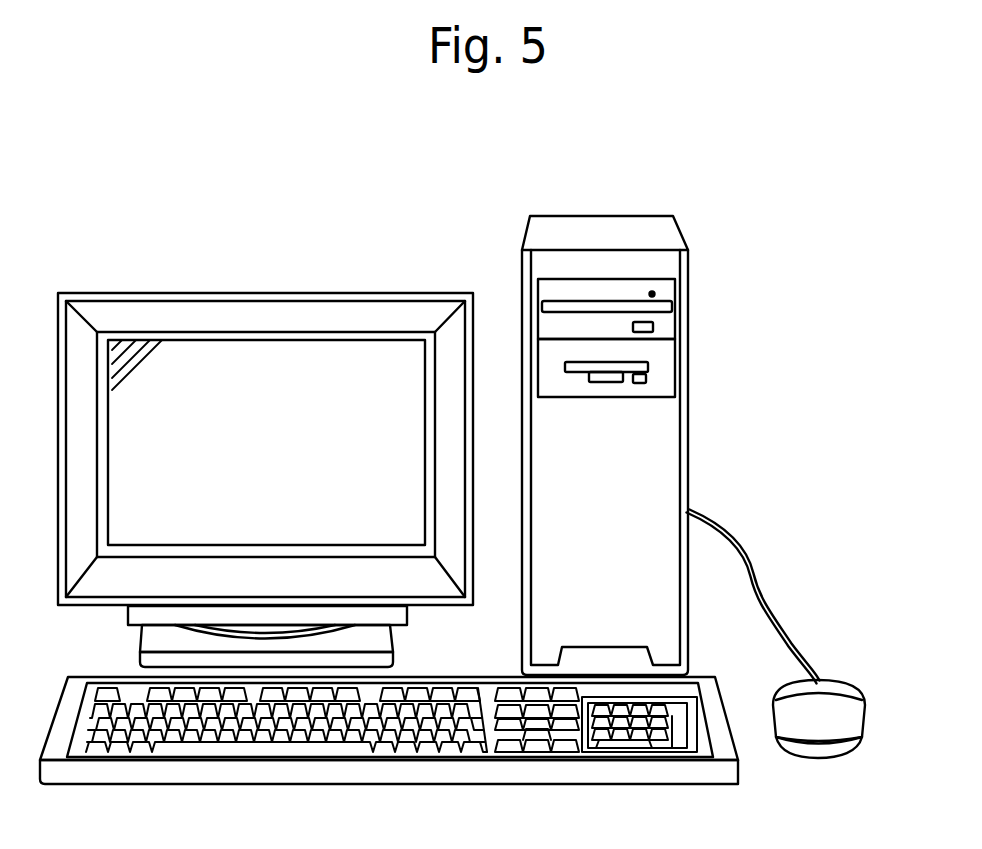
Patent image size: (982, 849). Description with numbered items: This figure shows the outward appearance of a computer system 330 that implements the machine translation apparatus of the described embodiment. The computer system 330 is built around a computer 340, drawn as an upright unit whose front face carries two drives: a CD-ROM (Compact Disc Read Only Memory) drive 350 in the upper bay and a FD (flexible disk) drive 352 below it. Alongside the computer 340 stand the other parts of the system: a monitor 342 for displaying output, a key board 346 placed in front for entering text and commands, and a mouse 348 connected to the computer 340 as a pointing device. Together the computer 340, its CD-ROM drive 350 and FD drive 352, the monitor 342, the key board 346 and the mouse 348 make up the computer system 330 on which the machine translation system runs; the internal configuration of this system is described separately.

The computer system 330 is at (772, 176).
The computer 340 is at (681, 218).
The monitor 342 is at (448, 290).
The key board 346 is at (722, 703).
The mouse 348 is at (863, 687).
The CD-ROM drive 350 is at (690, 305).
The FD drive 352 is at (656, 369).